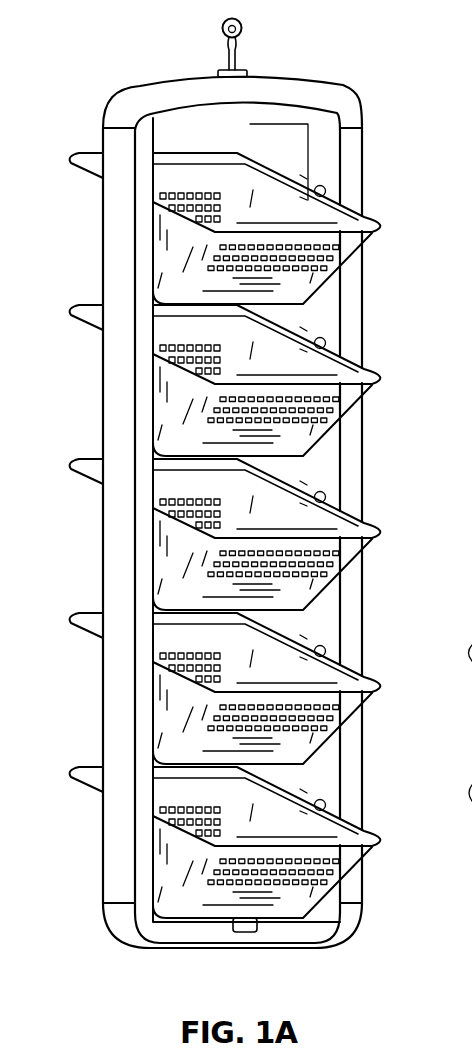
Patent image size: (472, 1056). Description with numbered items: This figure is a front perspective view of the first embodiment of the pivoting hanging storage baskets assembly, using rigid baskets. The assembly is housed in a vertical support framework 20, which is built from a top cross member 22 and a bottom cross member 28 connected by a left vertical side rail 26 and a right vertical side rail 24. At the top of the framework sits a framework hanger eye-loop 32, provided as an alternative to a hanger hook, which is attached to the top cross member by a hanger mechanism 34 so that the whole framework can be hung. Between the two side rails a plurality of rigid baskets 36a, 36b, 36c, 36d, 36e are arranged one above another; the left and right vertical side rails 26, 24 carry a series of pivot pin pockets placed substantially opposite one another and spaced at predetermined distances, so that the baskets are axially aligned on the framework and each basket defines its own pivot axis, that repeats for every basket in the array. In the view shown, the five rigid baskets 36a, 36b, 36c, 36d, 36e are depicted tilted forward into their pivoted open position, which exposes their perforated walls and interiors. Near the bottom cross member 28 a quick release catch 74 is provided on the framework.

The vertical support framework 20 is at (354, 91).
The top cross member 22 is at (162, 83).
The right vertical side rail 24 is at (364, 168).
The left vertical side rail 26 is at (100, 703).
The bottom cross member 28 is at (207, 948).
The framework hanger eye-loop 32 is at (243, 33).
The hanger mechanism 34 is at (247, 72).
The rigid basket 36a is at (386, 226).
The rigid basket 36b is at (386, 378).
The rigid basket 36c is at (386, 532).
The rigid basket 36d is at (382, 688).
The rigid basket 36e is at (383, 842).
The quick release catch 74 is at (258, 931).